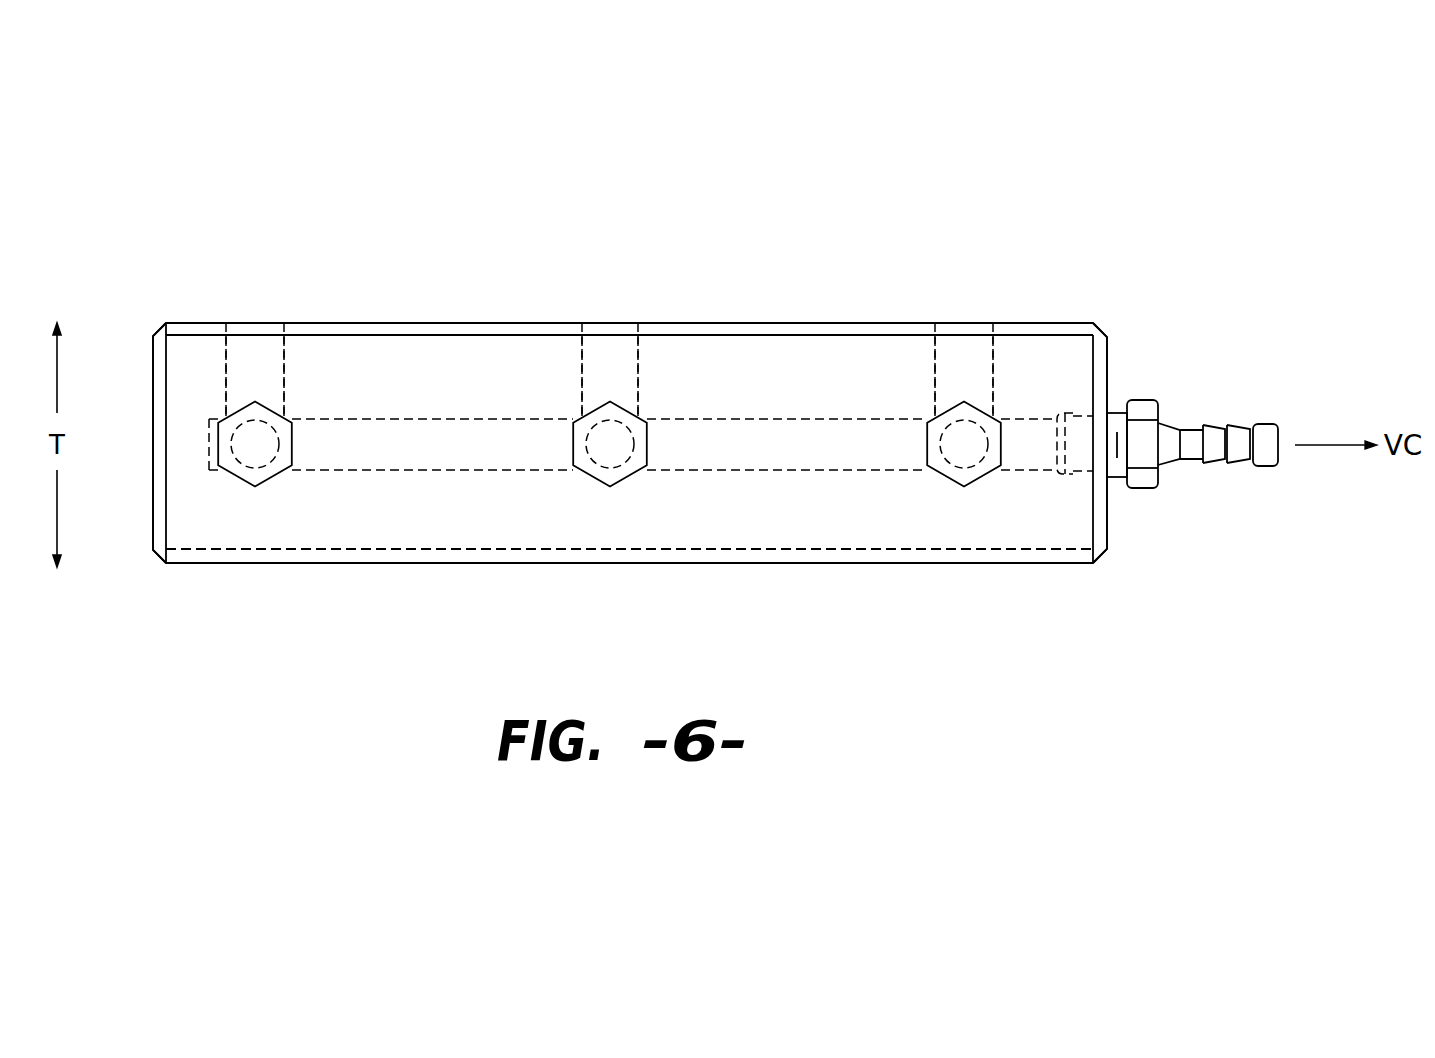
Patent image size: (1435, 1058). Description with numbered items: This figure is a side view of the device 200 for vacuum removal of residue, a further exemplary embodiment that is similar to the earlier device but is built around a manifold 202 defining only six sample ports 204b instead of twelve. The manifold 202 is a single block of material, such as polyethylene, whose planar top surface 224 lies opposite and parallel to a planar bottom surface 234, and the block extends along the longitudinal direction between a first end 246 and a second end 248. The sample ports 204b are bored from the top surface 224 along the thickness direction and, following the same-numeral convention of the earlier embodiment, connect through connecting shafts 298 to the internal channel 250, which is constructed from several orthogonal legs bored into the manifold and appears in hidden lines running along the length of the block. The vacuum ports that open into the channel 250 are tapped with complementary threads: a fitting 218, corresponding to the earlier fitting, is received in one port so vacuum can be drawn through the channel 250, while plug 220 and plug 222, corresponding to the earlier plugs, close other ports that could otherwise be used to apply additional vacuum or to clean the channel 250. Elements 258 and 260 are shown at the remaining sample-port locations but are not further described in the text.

The device 200 is at (1212, 233).
The manifold 202 is at (417, 363).
The sample ports 204b is at (253, 318).
The fitting 218 is at (1165, 435).
The plug 220 is at (1142, 475).
The plug 222 is at (953, 477).
The top surface 224 is at (195, 318).
The bottom surface 234 is at (723, 569).
The first end 246 is at (150, 576).
The second end 248 is at (1115, 577).
The channel 250 is at (705, 450).
The second hex nut 258 is at (598, 480).
The first hex nut 260 is at (272, 475).
The connecting shafts 298 is at (273, 368).